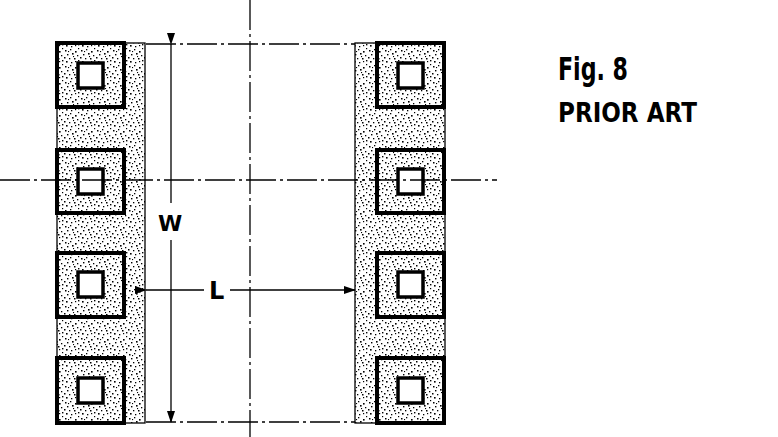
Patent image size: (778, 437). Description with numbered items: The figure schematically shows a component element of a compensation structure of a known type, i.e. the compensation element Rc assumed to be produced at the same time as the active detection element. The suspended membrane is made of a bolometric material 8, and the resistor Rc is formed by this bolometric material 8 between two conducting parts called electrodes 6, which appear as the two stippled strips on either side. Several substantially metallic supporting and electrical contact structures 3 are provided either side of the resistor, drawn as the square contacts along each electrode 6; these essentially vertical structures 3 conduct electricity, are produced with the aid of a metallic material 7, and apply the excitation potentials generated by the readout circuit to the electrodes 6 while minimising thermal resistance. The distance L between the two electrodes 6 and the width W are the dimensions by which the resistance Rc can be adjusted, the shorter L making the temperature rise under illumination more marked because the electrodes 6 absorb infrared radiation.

The supporting and electrical contact structure 3 is at (87, 63).
The electrode 6 is at (366, 236).
The metallic material 7 is at (411, 148).
The bolometric material 8 is at (267, 148).